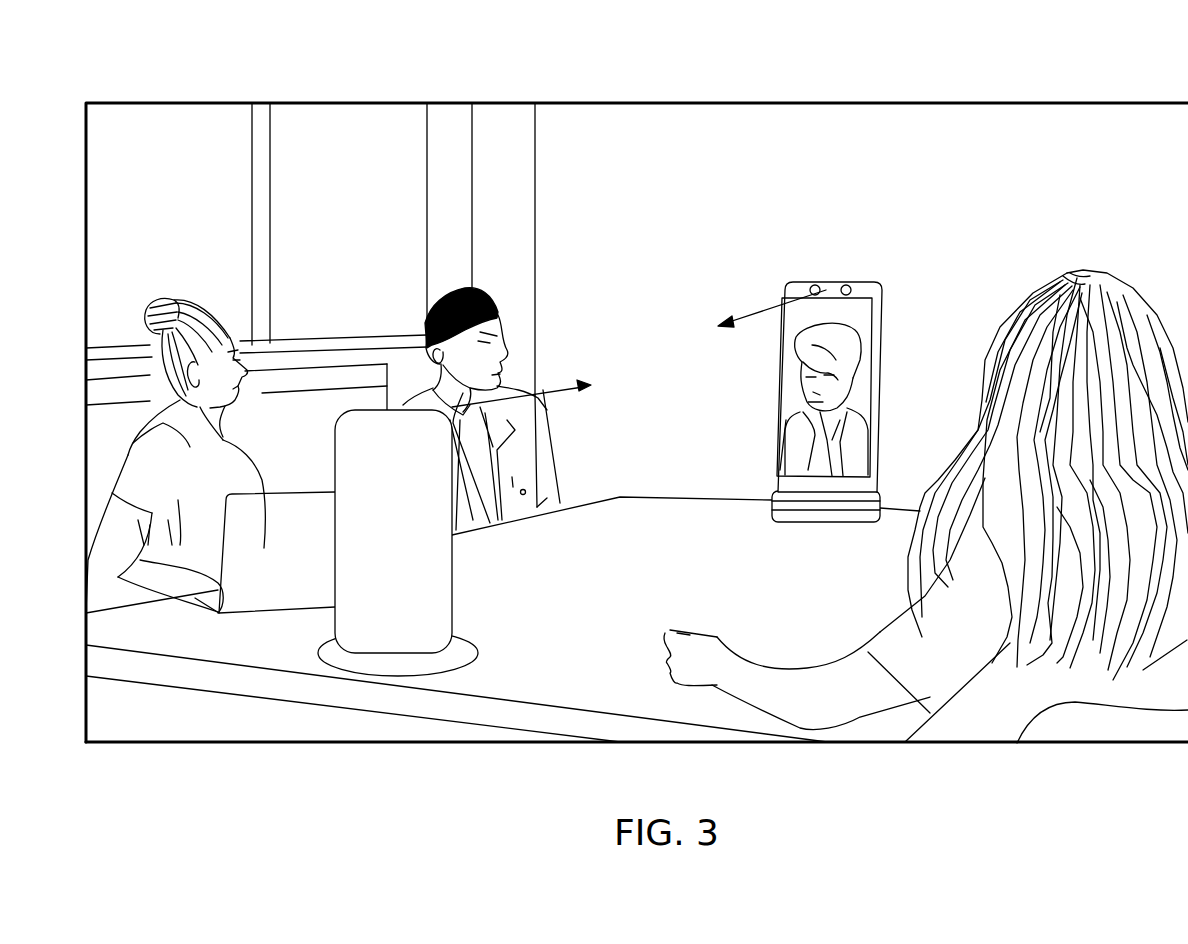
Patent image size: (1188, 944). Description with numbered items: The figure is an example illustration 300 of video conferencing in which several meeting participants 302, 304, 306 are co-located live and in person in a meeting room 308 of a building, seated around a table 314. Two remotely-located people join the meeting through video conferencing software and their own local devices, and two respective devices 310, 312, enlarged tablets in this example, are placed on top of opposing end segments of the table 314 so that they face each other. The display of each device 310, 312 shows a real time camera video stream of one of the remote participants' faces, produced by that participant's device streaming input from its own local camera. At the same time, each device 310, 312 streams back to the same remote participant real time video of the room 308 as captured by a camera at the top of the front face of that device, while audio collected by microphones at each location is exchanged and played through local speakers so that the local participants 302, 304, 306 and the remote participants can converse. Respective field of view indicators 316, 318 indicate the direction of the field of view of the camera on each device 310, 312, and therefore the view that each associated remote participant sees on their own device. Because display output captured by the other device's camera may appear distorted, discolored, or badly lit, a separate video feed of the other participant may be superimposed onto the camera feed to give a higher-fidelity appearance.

The illustration 300 is at (668, 103).
The meeting participant 302 is at (165, 298).
The meeting participant 304 is at (420, 320).
The meeting participant 306 is at (1087, 271).
The meeting room 308 is at (160, 136).
The device 310 is at (833, 280).
The device 312 is at (335, 443).
The table 314 is at (533, 660).
The field of view indicator 316 is at (751, 311).
The field of view indicator 318 is at (553, 397).